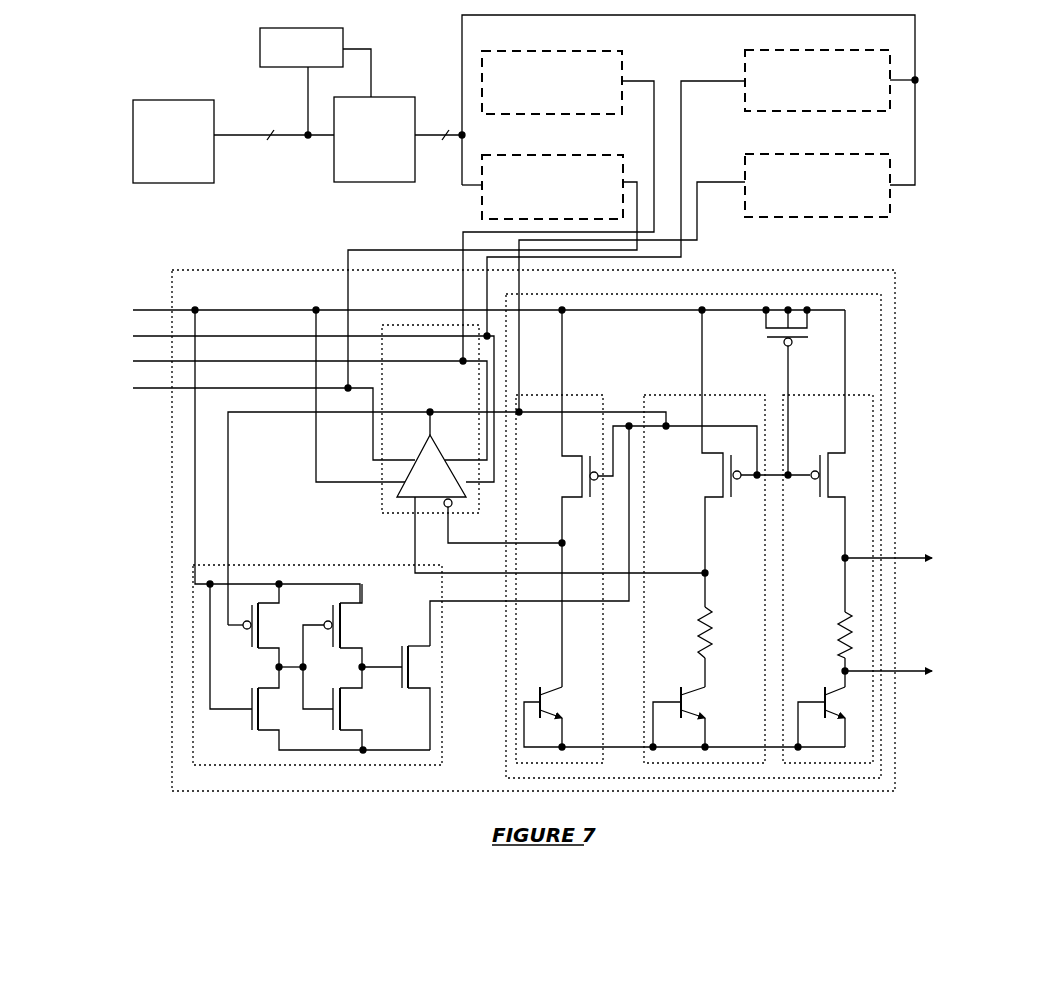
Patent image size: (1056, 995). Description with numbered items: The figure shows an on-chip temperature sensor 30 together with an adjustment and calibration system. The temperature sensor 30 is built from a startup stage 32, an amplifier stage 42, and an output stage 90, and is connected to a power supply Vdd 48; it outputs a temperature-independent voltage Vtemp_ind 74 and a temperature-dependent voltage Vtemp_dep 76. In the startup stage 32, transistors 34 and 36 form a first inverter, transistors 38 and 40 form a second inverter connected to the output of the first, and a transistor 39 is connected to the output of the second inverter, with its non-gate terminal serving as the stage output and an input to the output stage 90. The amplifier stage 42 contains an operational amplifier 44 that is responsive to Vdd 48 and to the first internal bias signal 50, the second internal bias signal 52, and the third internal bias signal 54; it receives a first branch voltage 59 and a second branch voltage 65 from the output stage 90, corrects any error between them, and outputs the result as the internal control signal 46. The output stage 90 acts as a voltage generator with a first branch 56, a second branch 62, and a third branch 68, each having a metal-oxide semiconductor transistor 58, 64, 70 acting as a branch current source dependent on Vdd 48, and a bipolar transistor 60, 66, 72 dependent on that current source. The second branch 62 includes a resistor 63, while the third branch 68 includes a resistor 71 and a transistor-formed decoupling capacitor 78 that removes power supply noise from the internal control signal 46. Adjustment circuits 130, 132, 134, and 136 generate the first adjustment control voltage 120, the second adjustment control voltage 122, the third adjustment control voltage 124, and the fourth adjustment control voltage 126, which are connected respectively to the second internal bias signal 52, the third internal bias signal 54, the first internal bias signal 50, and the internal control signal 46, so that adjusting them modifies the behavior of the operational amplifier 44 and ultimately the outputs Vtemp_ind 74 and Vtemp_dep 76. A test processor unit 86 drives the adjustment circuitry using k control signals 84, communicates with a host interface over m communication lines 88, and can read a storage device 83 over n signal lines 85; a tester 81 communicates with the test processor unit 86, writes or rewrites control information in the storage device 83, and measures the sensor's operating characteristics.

The temperature sensor 30 is at (256, 271).
The startup stage 32 is at (321, 564).
The transistor 34 is at (244, 633).
The transistor 36 is at (246, 713).
The transistor 38 is at (360, 626).
The transistor 39 is at (398, 662).
The transistor 40 is at (360, 710).
The amplifier stage 42 is at (379, 500).
The operational amplifier 44 is at (447, 451).
The internal control signal 46 is at (420, 411).
The power supply Vdd 48 is at (156, 310).
The internal bias signal BIAS_1 50 is at (156, 336).
The internal bias signal BIAS_2 52 is at (156, 361).
The internal bias signal BIAS_3 54 is at (156, 388).
The first branch 56 is at (546, 393).
The metal-oxide semiconductor transistor 58 is at (565, 482).
The first branch voltage 59 is at (485, 542).
The bipolar transistor 60 is at (568, 704).
The second branch 62 is at (673, 393).
The resistor 63 is at (711, 631).
The metal-oxide semiconductor transistor 64 is at (706, 481).
The second branch voltage 65 is at (479, 572).
The bipolar transistor 66 is at (710, 704).
The third branch 68 is at (825, 393).
The metal-oxide semiconductor transistor 70 is at (820, 450).
The resistor 71 is at (838, 631).
The bipolar transistor 72 is at (820, 684).
The temperature-independent voltage Vtemp_ind 74 is at (908, 557).
The temperature-dependent voltage Vtemp_dep 76 is at (908, 670).
The transistor-formed decoupling capacitor 78 is at (776, 347).
The tester 81 is at (178, 100).
The storage device 83 is at (305, 28).
The k control signals 84 is at (441, 134).
The n signal lines 85 is at (367, 49).
The test processor unit 86 is at (402, 97).
The m communication lines 88 is at (259, 135).
The output stage 90 is at (622, 294).
The adjustment control voltage Vadj1 120 is at (652, 121).
The adjustment control voltage Vadj2 122 is at (433, 249).
The adjustment control voltage Vadj3 124 is at (688, 80).
The adjustment control voltage Vadj4 126 is at (697, 200).
The adjustment circuit 130 is at (560, 51).
The adjustment circuit 132 is at (559, 155).
The adjustment circuit 134 is at (822, 50).
The adjustment circuit 136 is at (822, 154).